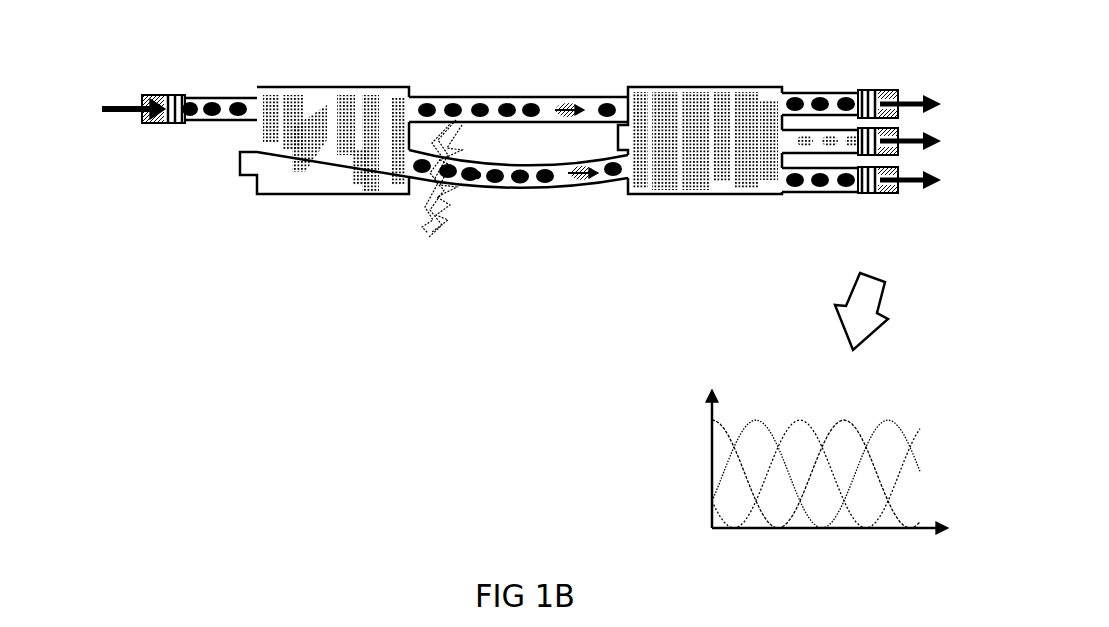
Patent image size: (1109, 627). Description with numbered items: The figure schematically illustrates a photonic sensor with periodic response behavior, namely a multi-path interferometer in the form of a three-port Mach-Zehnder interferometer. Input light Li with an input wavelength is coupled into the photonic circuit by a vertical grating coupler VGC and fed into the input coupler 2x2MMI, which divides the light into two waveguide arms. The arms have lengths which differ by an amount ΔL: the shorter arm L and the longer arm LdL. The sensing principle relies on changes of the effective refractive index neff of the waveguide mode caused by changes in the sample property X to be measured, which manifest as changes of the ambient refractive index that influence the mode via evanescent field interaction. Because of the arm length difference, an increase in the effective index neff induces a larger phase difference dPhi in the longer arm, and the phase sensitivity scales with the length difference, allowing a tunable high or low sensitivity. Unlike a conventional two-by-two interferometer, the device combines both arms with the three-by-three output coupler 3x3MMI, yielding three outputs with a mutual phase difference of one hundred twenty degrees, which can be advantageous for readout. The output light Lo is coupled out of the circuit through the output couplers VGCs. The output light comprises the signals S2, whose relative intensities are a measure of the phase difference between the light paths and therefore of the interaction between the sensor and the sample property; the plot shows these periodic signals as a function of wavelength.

The input light Li is at (117, 97).
The vertical grating coupler VGC is at (160, 126).
The 2×2 MMI coupler 2x2MMI is at (324, 160).
The arm of length L is at (518, 95).
The arm of length L+ΔL LdL is at (518, 189).
The effective refractive index neff is at (477, 174).
The sample property X is at (428, 253).
The phase difference dPhi is at (639, 195).
The 3×3 coupler 3x3MMI is at (700, 159).
The vertical grating couplers VGCs is at (894, 161).
The output light Lo is at (946, 82).
The output signals S2 is at (838, 454).